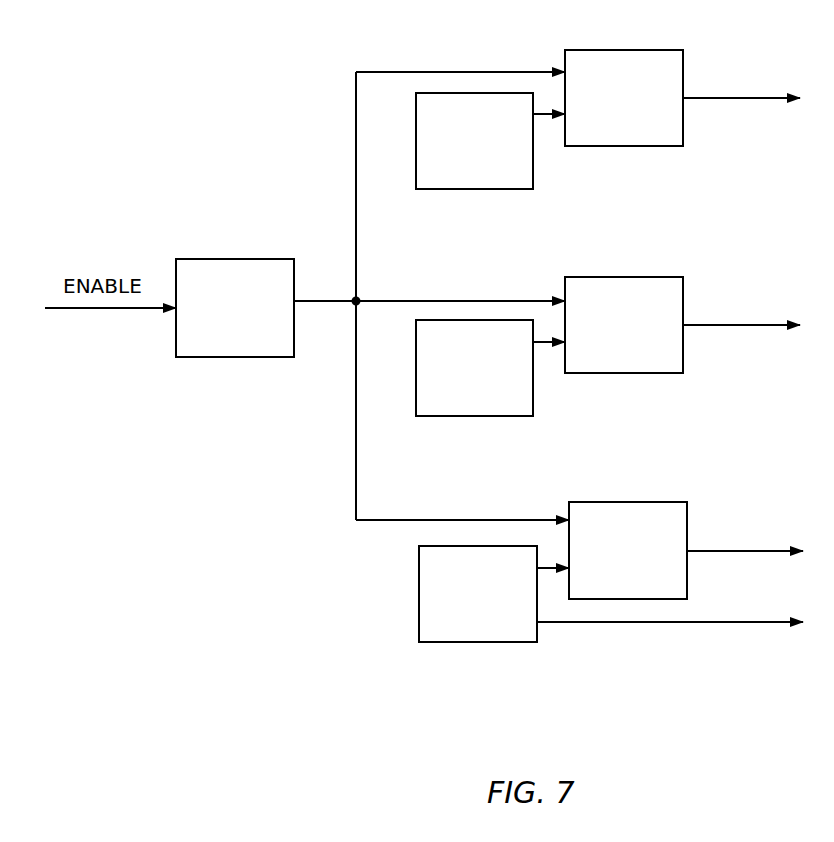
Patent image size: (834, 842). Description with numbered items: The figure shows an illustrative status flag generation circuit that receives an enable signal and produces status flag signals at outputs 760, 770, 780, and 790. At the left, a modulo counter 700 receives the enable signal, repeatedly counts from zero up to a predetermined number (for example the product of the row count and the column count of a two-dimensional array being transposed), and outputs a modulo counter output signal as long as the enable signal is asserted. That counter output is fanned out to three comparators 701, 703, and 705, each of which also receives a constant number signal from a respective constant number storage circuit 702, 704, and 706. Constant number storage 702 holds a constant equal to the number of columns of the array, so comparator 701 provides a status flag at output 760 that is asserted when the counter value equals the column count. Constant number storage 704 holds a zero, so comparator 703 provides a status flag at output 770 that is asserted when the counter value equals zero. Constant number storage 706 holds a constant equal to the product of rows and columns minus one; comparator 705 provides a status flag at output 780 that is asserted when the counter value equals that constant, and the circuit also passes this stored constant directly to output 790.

The modulo counter 700 is at (234, 259).
The comparator 701 is at (625, 50).
The constant number storage circuit 702 is at (474, 189).
The comparator 703 is at (625, 277).
The constant number storage circuit 704 is at (474, 416).
The comparator 705 is at (628, 502).
The constant number storage circuit 706 is at (478, 642).
The output 760 is at (735, 98).
The output 770 is at (735, 325).
The output 780 is at (738, 551).
The output 790 is at (737, 622).